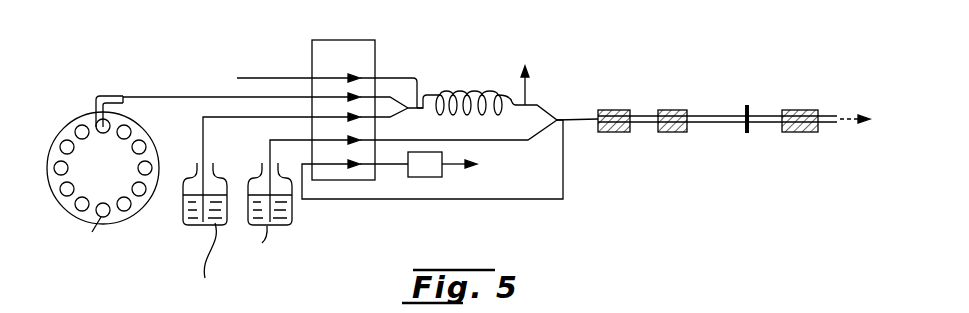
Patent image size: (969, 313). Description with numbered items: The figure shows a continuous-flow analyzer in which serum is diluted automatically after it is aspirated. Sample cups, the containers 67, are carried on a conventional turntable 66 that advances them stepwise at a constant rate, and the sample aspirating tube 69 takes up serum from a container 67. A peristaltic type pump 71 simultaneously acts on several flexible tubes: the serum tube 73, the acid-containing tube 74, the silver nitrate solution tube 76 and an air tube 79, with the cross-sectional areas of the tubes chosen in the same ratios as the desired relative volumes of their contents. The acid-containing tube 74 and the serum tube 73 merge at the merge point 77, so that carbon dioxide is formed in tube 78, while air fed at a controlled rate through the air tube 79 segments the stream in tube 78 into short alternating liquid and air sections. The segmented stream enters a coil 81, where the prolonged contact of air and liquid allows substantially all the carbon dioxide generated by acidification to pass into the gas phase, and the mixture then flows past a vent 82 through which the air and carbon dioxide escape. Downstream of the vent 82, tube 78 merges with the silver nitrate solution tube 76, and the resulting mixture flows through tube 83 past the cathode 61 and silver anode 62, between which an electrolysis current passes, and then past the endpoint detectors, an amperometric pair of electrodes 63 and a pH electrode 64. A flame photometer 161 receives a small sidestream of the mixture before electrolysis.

The cathode 61 is at (615, 133).
The silver anode 62 is at (673, 133).
The amperometric pair of electrodes 63 is at (745, 105).
The pH electrode 64 is at (793, 132).
The turntable 66 is at (67, 205).
The container 67 is at (101, 134).
The sample aspirating tube 69 is at (101, 95).
The pump 71 is at (348, 40).
The serum tube 73 is at (330, 97).
The acid-containing tube 74 is at (330, 117).
The silver nitrate solution tube 76 is at (327, 140).
The merge point 77 is at (405, 113).
The tube 78 is at (422, 103).
The air tube 79 is at (363, 78).
The coil 81 is at (475, 92).
The vent 82 is at (528, 93).
The tube 83 is at (582, 118).
The flame photometer 161 is at (432, 172).